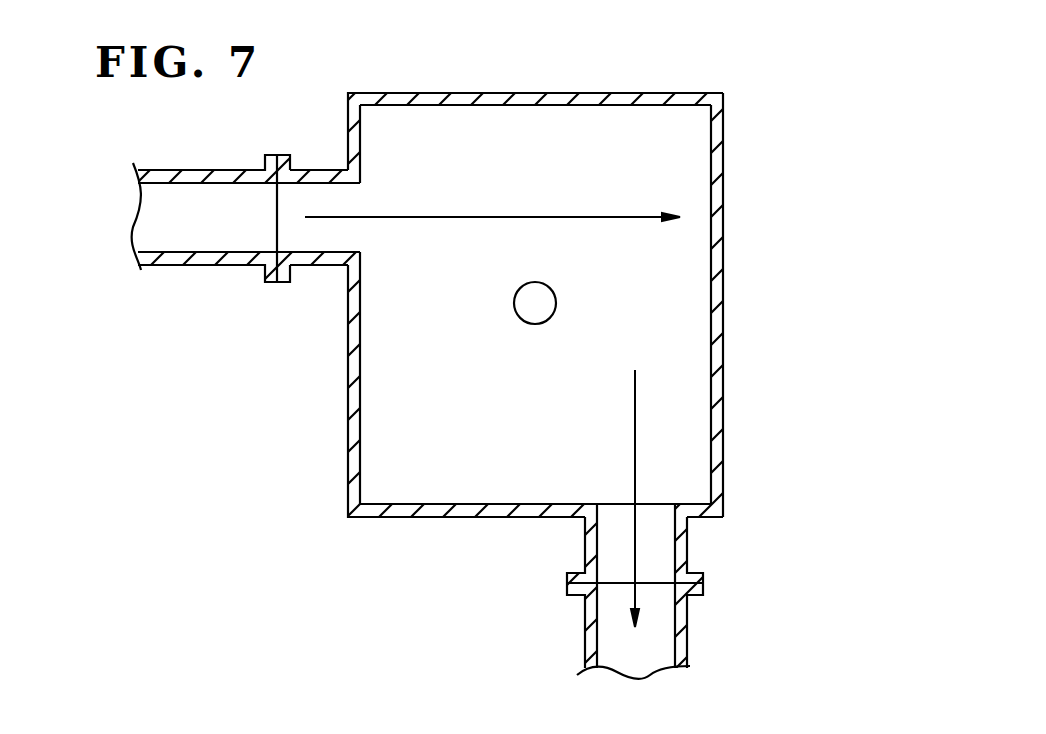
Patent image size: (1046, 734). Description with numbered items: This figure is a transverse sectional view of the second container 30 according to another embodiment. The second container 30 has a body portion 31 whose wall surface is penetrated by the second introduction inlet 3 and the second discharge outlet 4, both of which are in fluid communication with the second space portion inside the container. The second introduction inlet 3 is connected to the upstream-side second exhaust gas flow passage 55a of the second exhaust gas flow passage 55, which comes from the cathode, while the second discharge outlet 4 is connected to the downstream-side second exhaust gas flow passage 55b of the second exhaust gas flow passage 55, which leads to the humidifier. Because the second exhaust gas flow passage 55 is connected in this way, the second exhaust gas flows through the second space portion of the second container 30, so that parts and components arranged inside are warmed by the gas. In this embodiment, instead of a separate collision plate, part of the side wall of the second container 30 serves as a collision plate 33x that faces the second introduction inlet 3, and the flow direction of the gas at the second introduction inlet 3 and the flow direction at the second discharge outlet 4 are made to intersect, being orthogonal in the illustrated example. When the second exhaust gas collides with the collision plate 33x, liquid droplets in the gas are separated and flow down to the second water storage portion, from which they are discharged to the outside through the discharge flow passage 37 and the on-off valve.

The second introduction inlet 3 is at (315, 195).
The second discharge outlet 4 is at (658, 540).
The second container 30 is at (480, 365).
The body portion 31 is at (480, 365).
The collision plate 33x is at (724, 292).
The discharge flow passage 37 is at (538, 318).
The second exhaust gas flow passage 55 is at (481, 394).
The upstream-side second exhaust gas flow passage 55a is at (190, 267).
The downstream-side second exhaust gas flow passage 55b is at (688, 627).